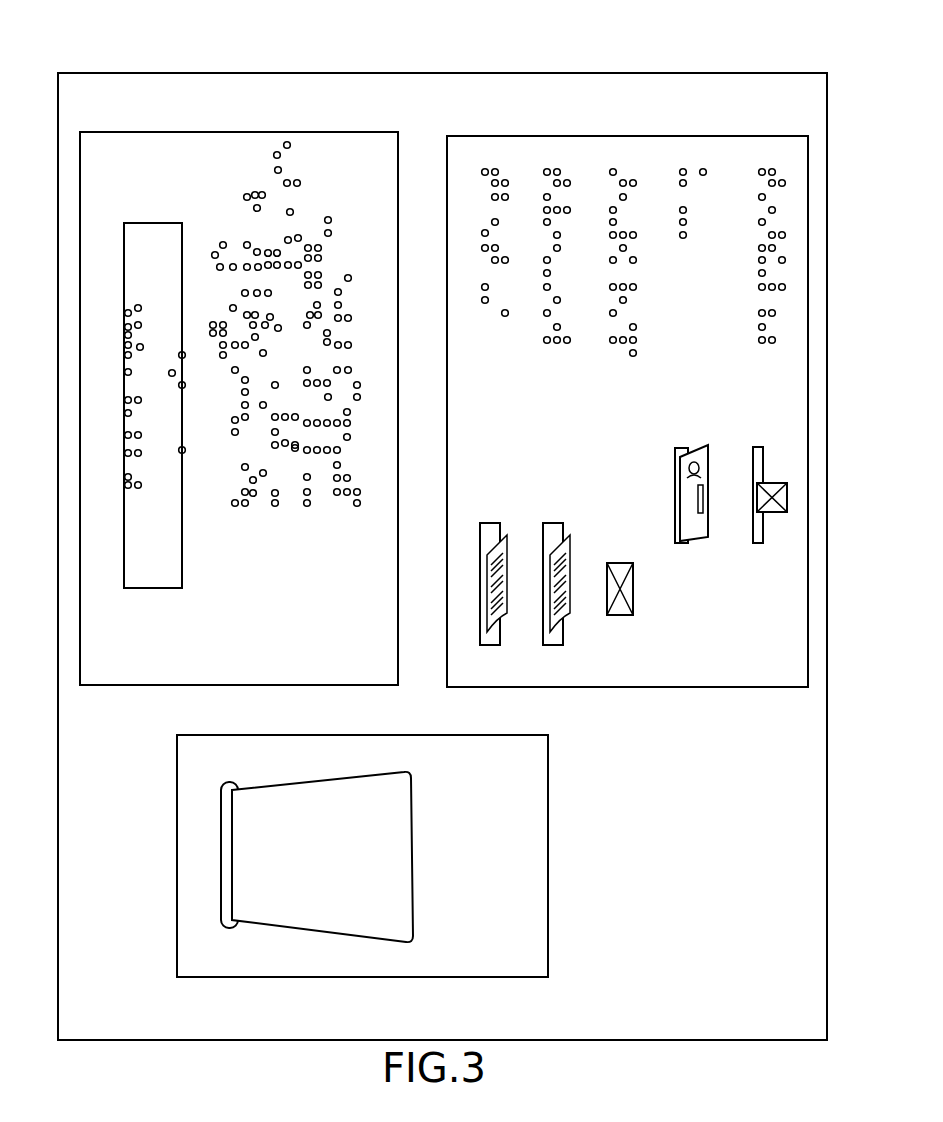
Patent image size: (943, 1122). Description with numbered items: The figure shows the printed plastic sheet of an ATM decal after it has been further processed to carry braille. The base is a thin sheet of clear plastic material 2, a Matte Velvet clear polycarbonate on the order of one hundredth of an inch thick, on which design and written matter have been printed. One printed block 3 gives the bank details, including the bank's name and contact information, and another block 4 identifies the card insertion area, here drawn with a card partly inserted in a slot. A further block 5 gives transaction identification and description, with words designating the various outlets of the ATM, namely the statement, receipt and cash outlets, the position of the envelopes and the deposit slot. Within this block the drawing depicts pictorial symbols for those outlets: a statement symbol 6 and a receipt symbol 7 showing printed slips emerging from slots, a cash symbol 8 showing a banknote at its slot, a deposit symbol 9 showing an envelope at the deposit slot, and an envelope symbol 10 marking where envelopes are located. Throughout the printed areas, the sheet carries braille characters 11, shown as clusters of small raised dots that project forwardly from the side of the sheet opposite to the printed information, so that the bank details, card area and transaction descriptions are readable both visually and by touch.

The sheet of clear plastic material 2 is at (422, 133).
The block giving bank details 3 is at (132, 162).
The block identifying the card insertion area 4 is at (200, 882).
The block giving transaction identification and description 5 is at (571, 160).
The statement slot 6 is at (490, 528).
The receipt slot 7 is at (552, 533).
The cash slot 8 is at (680, 450).
The deposit slot 9 is at (755, 458).
The envelope slot 10 is at (614, 567).
The braille characters 11 is at (223, 242).